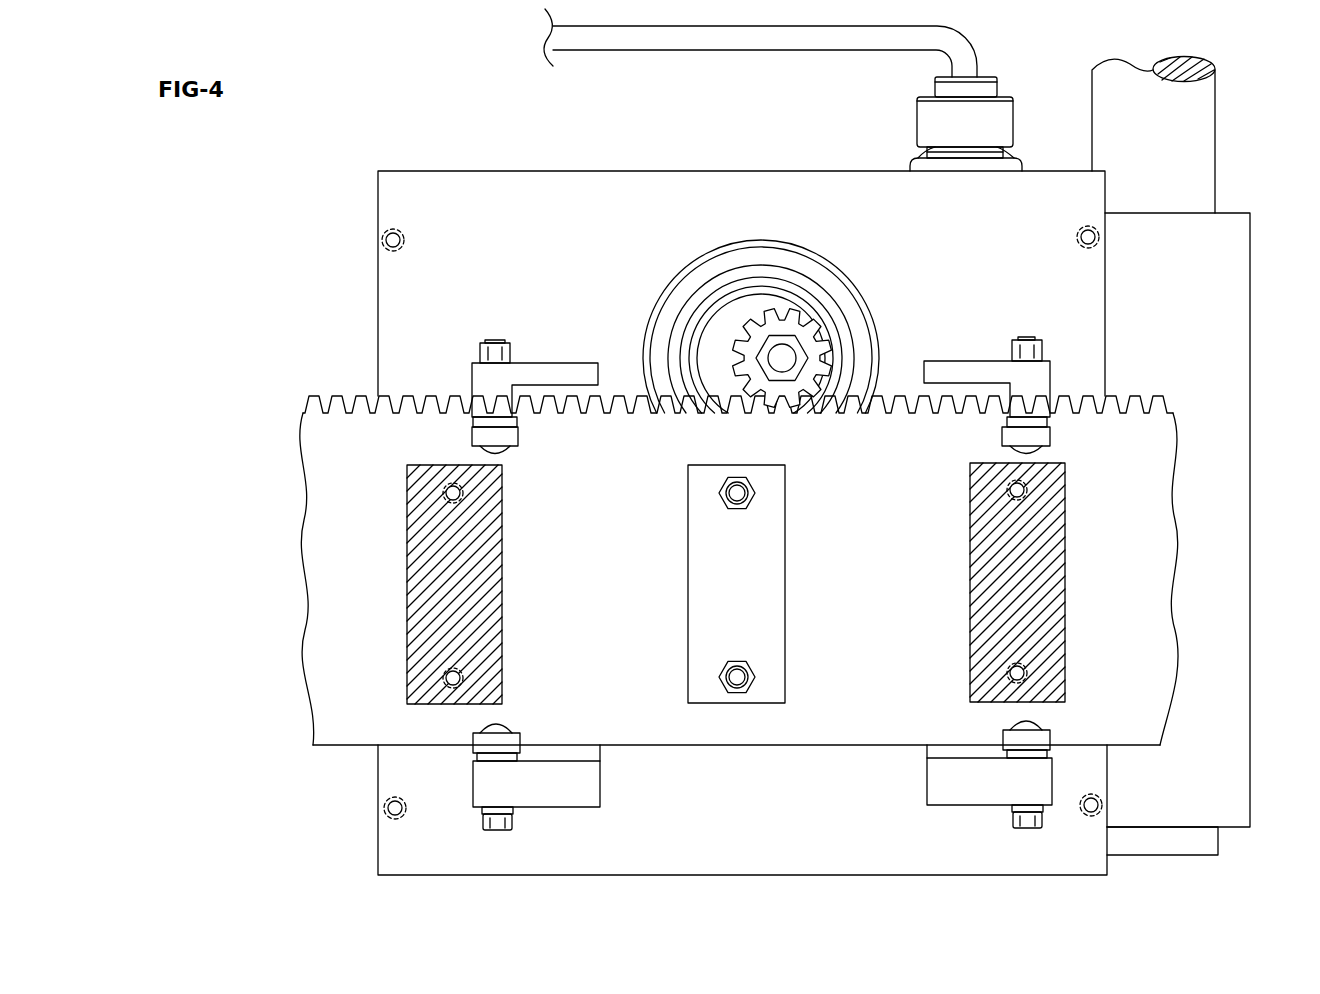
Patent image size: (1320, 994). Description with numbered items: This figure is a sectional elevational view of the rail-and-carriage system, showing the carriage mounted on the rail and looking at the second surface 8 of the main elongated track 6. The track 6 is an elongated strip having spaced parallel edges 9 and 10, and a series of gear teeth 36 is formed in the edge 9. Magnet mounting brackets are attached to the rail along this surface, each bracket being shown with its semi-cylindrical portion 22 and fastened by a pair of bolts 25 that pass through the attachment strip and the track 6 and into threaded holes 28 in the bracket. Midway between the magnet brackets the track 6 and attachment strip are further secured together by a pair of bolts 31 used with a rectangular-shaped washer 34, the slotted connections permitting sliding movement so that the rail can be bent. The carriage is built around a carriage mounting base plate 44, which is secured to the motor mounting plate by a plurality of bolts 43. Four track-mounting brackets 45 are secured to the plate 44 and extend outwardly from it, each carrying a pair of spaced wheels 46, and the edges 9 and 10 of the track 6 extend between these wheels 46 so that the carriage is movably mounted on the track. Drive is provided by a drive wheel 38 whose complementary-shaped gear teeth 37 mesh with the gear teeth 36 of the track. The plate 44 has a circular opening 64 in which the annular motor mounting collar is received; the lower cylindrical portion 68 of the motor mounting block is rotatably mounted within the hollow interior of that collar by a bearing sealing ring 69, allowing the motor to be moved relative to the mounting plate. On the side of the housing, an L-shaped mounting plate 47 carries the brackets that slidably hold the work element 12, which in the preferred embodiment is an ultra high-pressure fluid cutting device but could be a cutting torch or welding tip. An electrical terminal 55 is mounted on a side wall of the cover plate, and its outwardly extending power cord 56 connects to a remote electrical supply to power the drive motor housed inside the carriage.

The track 6 is at (306, 508).
The second surface 8 is at (330, 660).
The edge 9 is at (728, 377).
The edge 10 is at (712, 570).
The work element 12 is at (1215, 132).
The semi-cylindrical portion 22 is at (505, 555).
The bolts 25 is at (447, 492).
The threaded holes 28 is at (456, 492).
The bolts 31 is at (740, 493).
The rectangular-shaped washers 34 is at (771, 584).
The gear teeth 36 is at (423, 398).
The gear teeth 37 is at (765, 325).
The drive wheel 38 is at (715, 328).
The bolts 43 is at (386, 240).
The carriage mounting base plate 44 is at (470, 190).
The track-mounting brackets 45 is at (545, 372).
The wheels 46 is at (520, 437).
The L-shaped mounting plate 47 is at (1240, 300).
The electrical terminal 55 is at (1013, 110).
The power cord 56 is at (737, 52).
The circular opening 64 is at (834, 286).
The lower cylindrical portion 68 is at (708, 348).
The bearing sealing ring 69 is at (760, 292).